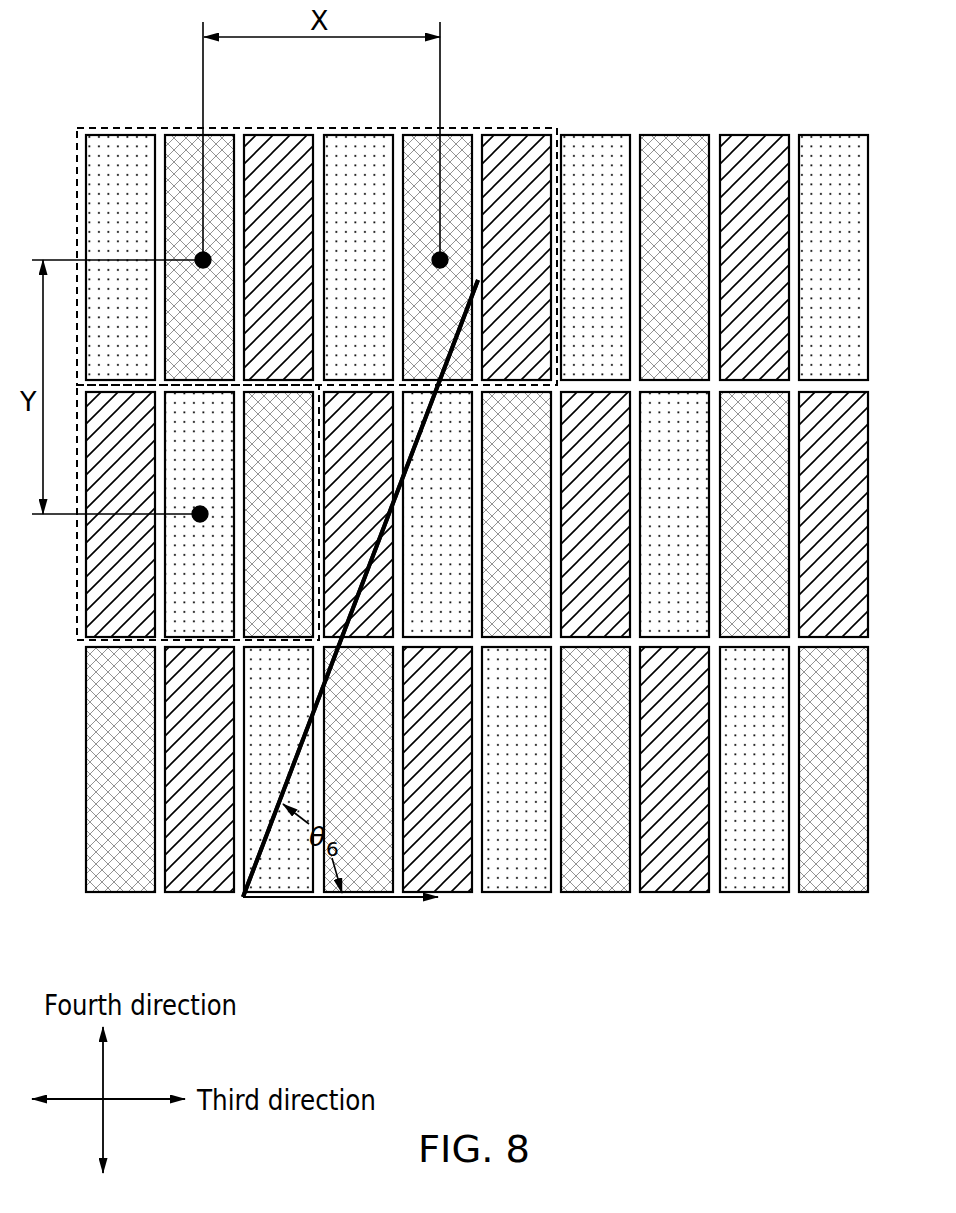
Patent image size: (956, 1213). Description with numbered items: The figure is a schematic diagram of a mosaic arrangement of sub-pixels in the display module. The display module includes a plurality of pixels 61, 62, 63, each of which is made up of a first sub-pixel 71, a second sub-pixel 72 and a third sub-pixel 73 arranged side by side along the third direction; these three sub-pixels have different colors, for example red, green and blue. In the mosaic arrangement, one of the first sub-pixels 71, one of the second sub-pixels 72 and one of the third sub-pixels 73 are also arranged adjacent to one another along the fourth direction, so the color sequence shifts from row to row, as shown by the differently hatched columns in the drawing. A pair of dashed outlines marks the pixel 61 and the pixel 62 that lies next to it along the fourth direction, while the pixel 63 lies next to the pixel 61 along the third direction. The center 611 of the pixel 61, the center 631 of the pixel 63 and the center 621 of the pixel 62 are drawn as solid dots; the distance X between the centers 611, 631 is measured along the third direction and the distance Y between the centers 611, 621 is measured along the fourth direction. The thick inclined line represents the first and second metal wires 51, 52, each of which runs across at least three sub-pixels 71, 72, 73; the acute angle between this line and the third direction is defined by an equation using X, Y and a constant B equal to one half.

The first metal wire 51 is at (478, 280).
The second metal wire 52 is at (478, 280).
The pixel 61 is at (77, 191).
The center of pixel 611 is at (203, 260).
The pixel 62 is at (77, 605).
The center of pixel 621 is at (200, 516).
The pixel 63 is at (475, 128).
The center of pixel 631 is at (440, 260).
The first sub-pixel 71 is at (122, 132).
The second sub-pixel 72 is at (180, 132).
The third sub-pixel 73 is at (290, 132).